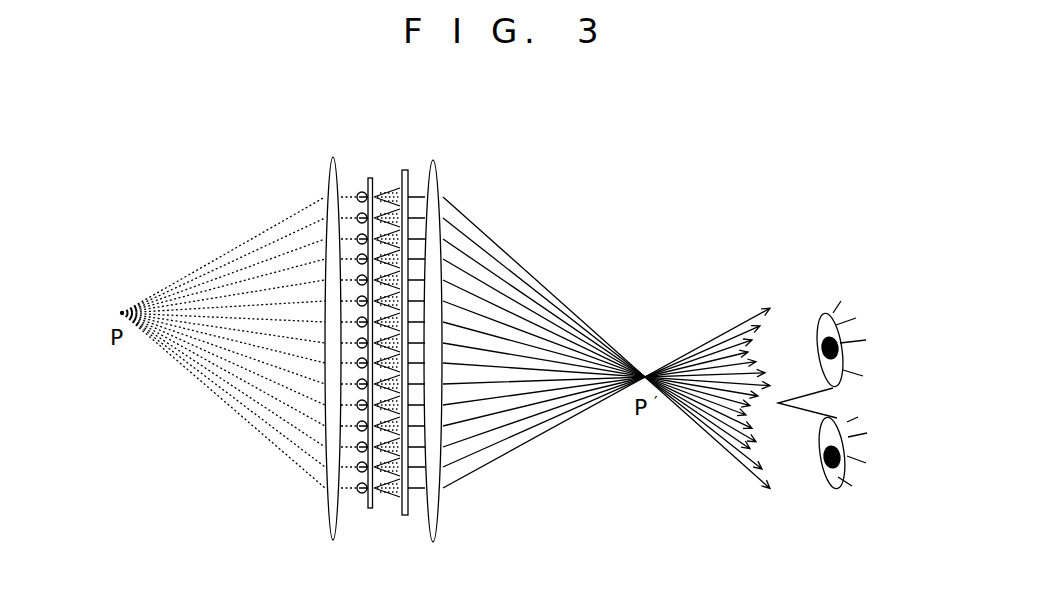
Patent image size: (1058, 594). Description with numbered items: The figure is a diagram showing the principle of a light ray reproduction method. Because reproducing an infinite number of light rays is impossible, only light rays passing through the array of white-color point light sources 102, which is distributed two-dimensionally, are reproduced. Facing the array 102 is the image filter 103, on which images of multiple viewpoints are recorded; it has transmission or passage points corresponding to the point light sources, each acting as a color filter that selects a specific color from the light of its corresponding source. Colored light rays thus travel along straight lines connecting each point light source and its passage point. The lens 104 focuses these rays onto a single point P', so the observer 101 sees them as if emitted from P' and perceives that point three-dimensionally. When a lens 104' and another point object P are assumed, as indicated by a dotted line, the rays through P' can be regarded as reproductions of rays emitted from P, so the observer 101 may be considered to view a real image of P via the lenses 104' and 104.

The observer 101 is at (822, 495).
The array of white-color point light sources 102 is at (363, 502).
The image filter 103 is at (408, 170).
The lens 104 is at (487, 352).
The lens 104' is at (300, 324).